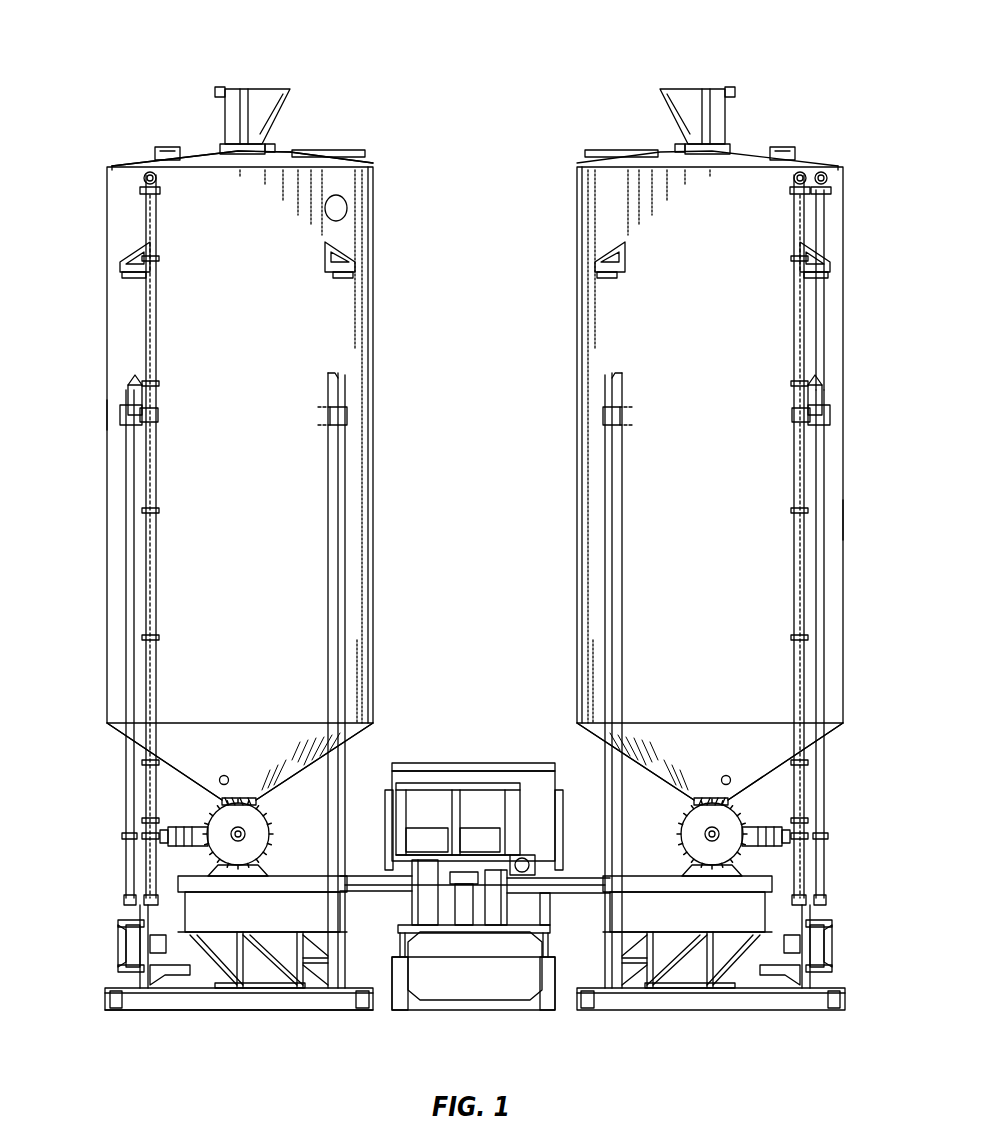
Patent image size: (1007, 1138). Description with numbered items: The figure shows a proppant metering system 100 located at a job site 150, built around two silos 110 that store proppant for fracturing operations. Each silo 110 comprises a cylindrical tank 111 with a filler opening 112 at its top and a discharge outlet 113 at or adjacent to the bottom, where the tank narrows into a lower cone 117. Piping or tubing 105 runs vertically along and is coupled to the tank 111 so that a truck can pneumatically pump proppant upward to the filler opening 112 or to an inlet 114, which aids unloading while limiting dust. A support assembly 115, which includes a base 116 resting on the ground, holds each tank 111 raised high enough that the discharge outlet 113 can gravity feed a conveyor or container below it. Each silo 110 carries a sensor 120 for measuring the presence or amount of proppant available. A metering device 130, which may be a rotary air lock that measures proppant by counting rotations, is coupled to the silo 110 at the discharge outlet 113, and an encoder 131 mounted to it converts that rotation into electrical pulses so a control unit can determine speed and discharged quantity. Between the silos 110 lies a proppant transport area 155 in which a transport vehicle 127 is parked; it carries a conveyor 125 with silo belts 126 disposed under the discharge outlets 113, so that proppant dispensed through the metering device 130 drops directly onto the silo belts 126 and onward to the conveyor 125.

The metering system 100 is at (122, 42).
The piping or tubing 105 is at (146, 330).
The silo 110 is at (110, 205).
The cylindrical tank 111 is at (107, 415).
The filler opening 112 is at (226, 118).
The discharge outlet 113 is at (240, 800).
The inlet 114 is at (148, 176).
The support assembly 115 is at (124, 945).
The base 116 is at (108, 1000).
The lower cone 117 is at (298, 748).
The sensor 120 is at (223, 776).
The conveyor 125 is at (525, 1012).
The silo belt 126 is at (215, 968).
The transport vehicle 127 is at (460, 763).
The metering device 130 is at (222, 812).
The encoder 131 is at (236, 838).
The job site 150 is at (50, 720).
The proppant transport area 155 is at (465, 572).